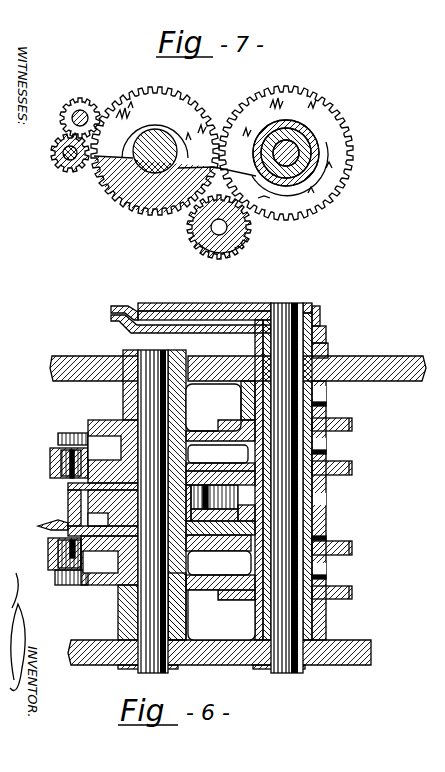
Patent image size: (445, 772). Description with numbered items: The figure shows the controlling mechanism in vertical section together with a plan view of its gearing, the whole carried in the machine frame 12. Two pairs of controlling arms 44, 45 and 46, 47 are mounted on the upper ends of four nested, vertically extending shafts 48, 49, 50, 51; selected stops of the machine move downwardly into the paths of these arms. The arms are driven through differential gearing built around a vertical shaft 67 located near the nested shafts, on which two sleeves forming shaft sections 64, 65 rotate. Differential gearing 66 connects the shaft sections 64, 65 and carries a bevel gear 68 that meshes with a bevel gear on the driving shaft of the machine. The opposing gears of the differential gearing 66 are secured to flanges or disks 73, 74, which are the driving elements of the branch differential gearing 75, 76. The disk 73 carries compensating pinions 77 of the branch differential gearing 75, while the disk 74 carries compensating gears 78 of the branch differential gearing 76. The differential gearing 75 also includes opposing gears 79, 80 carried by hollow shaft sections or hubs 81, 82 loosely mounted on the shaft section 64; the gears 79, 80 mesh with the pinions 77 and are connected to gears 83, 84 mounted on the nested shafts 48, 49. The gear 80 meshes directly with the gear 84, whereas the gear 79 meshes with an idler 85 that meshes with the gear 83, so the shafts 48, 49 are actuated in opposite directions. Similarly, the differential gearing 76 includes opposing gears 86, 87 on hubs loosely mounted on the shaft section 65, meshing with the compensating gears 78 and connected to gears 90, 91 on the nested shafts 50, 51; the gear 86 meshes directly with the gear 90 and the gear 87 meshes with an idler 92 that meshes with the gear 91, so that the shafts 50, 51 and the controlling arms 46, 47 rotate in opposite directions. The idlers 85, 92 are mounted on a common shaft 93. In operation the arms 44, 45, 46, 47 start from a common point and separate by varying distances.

In FIG. 6, the frame 12 is at (400, 373).
In FIG. 6, the controlling arm 44 is at (205, 295).
In FIG. 6, the controlling arm 45 is at (128, 300).
In FIG. 6, the controlling arm 46 is at (103, 301).
In FIG. 6, the controlling arm 47 is at (103, 311).
In FIG. 7, the vertically extending shaft 48 is at (294, 157).
In FIG. 6, the vertically extending shaft 48 is at (282, 298).
In FIG. 7, the vertically extending shaft 49 is at (291, 168).
In FIG. 6, the vertically extending shaft 49 is at (312, 303).
In FIG. 7, the vertically extending shaft 50 is at (288, 178).
In FIG. 6, the vertically extending shaft 50 is at (318, 322).
In FIG. 7, the vertically extending shaft 51 is at (292, 190).
In FIG. 6, the vertically extending shaft 51 is at (320, 340).
In FIG. 6, the shaft section 64 is at (112, 604).
In FIG. 6, the shaft section 65 is at (115, 396).
In FIG. 6, the differential gearing 66 is at (234, 503).
In FIG. 7, the vertical shaft 67 is at (124, 160).
In FIG. 6, the vertical shaft 67 is at (146, 665).
In FIG. 6, the bevel gear 68 is at (262, 513).
In FIG. 6, the flange or disk 73 is at (38, 526).
In FIG. 6, the flange or disk 74 is at (42, 468).
In FIG. 6, the branch differential gearing 75 is at (96, 538).
In FIG. 6, the branch differential gearing 76 is at (106, 460).
In FIG. 7, the compensating pinion 77 is at (45, 150).
In FIG. 6, the compensating pinion 77 is at (47, 566).
In FIG. 7, the compensating gear 78 is at (58, 100).
In FIG. 6, the compensating gear 78 is at (50, 431).
In FIG. 7, the opposing gear 79 is at (103, 194).
In FIG. 6, the opposing gear 79 is at (188, 582).
In FIG. 6, the opposing gear 80 is at (180, 551).
In FIG. 6, the hollow shaft section or hub 81 is at (192, 601).
In FIG. 6, the hollow shaft section or hub 82 is at (219, 563).
In FIG. 6, the gear 83 is at (330, 591).
In FIG. 6, the gear 84 is at (330, 546).
In FIG. 7, the idler 85 is at (180, 237).
In FIG. 6, the opposing gear 86 is at (213, 456).
In FIG. 7, the opposing gear 87 is at (172, 107).
In FIG. 6, the opposing gear 87 is at (195, 423).
In FIG. 7, the gear 90 is at (314, 110).
In FIG. 6, the gear 90 is at (345, 459).
In FIG. 7, the gear 91 is at (308, 134).
In FIG. 6, the gear 91 is at (345, 415).
In FIG. 7, the idler 92 is at (236, 240).
In FIG. 7, the shaft 93 is at (222, 225).